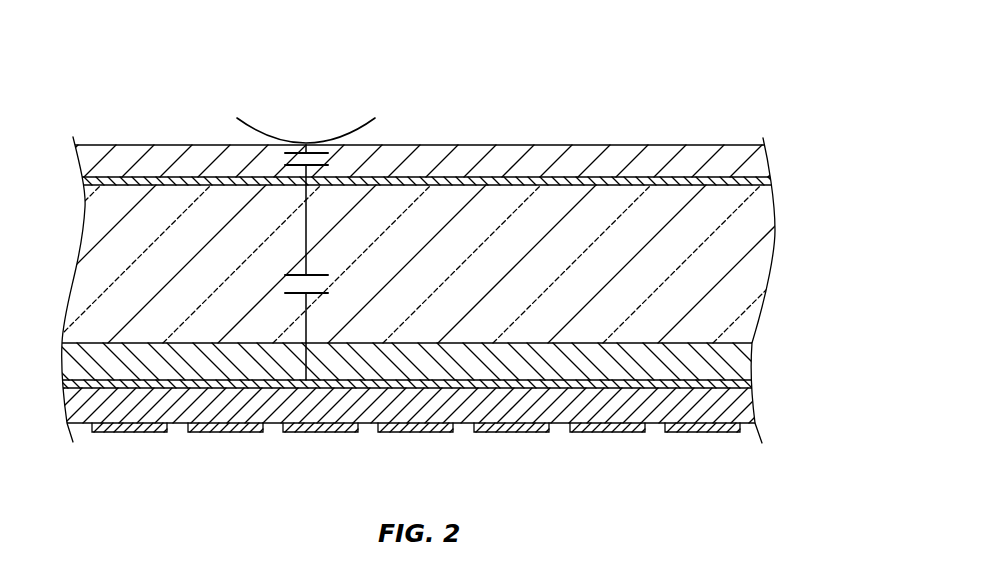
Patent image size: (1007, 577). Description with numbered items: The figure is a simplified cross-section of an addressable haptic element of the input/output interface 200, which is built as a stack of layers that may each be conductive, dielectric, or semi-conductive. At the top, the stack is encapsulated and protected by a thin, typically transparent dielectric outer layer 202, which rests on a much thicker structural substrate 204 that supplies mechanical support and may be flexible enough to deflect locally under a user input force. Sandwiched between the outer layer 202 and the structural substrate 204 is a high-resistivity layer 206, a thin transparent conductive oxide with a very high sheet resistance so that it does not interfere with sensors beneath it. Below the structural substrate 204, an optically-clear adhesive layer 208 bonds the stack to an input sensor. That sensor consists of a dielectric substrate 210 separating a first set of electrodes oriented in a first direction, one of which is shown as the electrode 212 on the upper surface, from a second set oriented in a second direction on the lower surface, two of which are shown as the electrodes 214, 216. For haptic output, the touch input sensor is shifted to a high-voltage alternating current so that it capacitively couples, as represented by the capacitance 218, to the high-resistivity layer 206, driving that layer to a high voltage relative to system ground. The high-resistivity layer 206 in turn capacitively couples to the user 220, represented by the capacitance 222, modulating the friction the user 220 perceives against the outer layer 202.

The input/output interface 200 is at (155, 50).
The outer layer 202 is at (690, 145).
The structural substrate 204 is at (773, 262).
The high-resistivity layer 206 is at (772, 178).
The optically-clear adhesive layer 208 is at (753, 360).
The dielectric substrate 210 is at (755, 405).
The electrode 212 is at (753, 383).
The electrode 214 is at (132, 433).
The electrode 216 is at (230, 433).
The capacitance 218 is at (323, 283).
The user 220 is at (246, 128).
The capacitance 222 is at (320, 158).